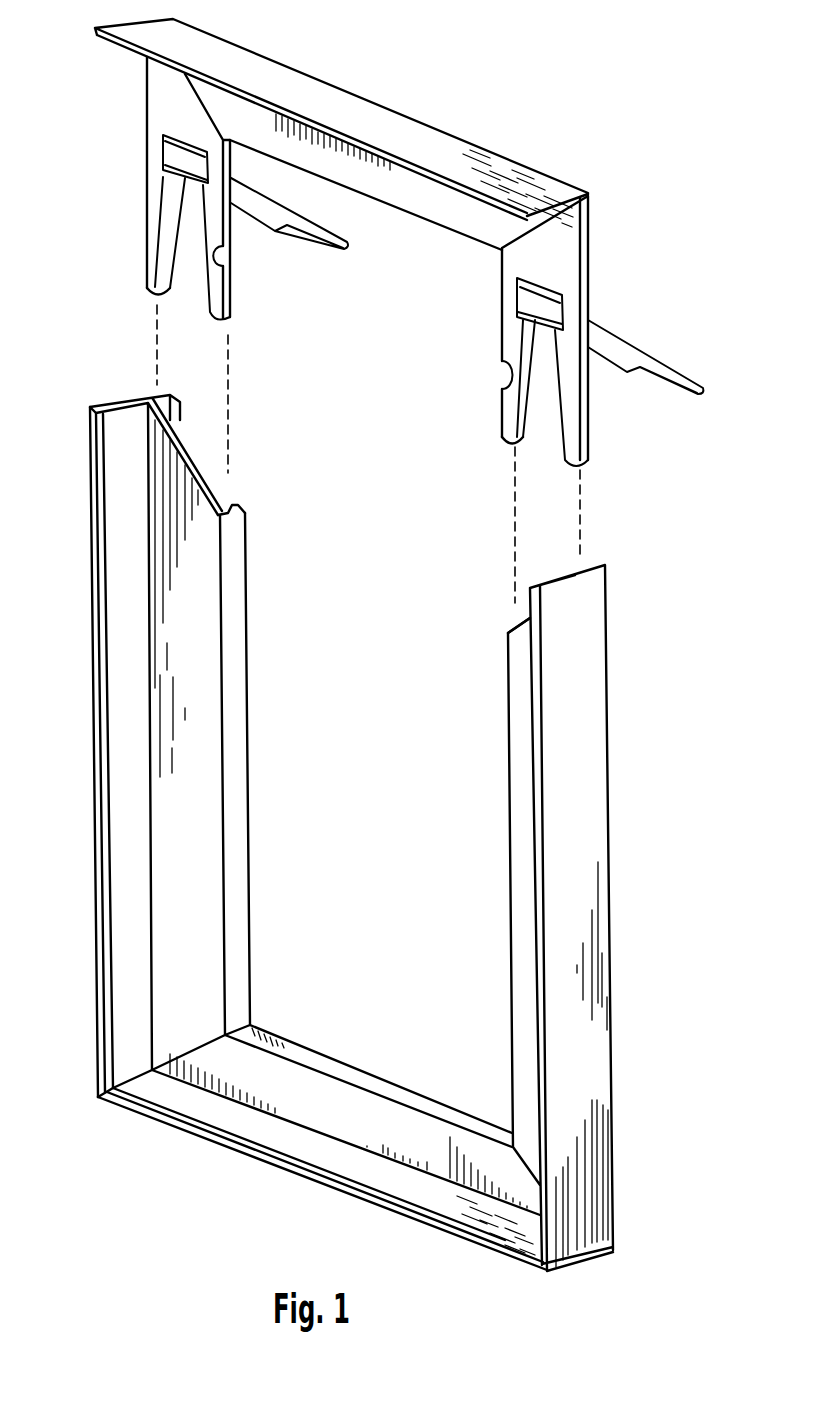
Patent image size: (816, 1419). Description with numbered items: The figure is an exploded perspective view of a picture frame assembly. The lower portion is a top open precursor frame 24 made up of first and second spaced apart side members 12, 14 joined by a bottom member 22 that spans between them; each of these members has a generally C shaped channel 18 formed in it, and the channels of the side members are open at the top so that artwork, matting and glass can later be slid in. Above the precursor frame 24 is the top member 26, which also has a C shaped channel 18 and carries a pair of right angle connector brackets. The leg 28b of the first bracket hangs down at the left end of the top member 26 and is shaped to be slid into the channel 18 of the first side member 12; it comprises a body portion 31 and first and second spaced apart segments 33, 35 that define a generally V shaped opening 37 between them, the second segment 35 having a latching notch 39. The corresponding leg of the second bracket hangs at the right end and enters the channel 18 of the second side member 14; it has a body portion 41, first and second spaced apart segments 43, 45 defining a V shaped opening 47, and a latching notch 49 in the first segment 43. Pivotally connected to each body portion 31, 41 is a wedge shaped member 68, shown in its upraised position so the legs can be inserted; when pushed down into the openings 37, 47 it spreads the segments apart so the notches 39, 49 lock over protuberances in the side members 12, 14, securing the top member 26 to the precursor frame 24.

The first side member 12 is at (145, 746).
The second side member 14 is at (588, 779).
The C shaped channel 18 is at (216, 500).
The bottom member 22 is at (297, 1176).
The precursor frame 24 is at (97, 438).
The top member 26 is at (422, 140).
The second leg 28b is at (364, 282).
The body portion 31 is at (185, 125).
The first segment 33 is at (145, 265).
The second segment 35 is at (217, 302).
The V shaped opening 37 is at (191, 248).
The latching notch 39 is at (231, 256).
The body portion 41 is at (548, 255).
The first segment 43 is at (542, 414).
The second segment 45 is at (573, 424).
The V shaped opening 47 is at (545, 410).
The latching notch 49 is at (506, 371).
The wedge shaped member 68 is at (347, 244).